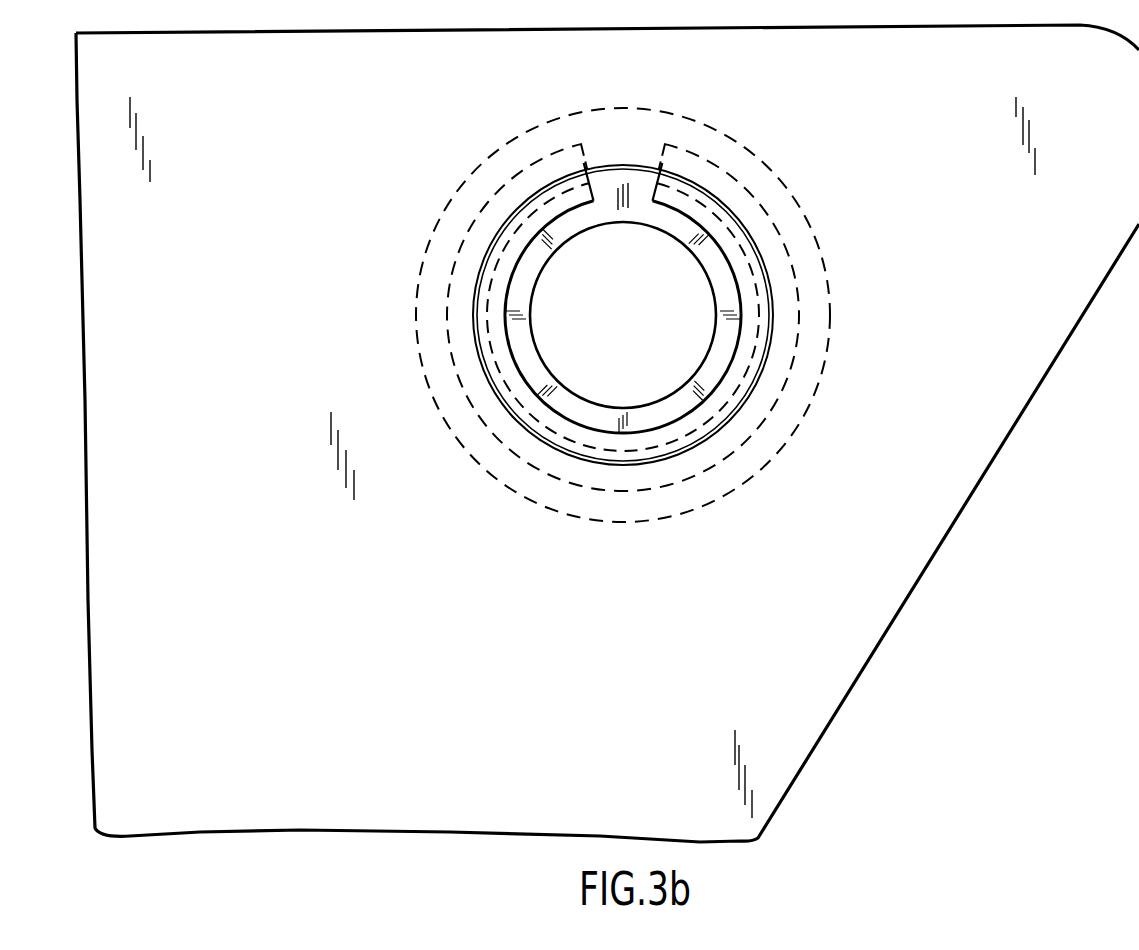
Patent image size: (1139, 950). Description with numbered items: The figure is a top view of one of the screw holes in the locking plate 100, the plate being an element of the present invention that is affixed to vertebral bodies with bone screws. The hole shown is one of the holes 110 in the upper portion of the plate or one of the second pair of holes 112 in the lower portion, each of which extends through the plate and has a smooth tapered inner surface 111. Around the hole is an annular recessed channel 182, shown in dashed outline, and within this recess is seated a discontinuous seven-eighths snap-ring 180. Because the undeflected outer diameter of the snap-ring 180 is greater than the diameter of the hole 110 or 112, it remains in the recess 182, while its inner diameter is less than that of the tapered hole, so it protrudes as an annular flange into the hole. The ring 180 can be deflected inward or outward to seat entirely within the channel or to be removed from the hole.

The plate 100 is at (470, 604).
The holes 110 is at (602, 301).
The second pair of holes 112 is at (602, 354).
The tapered inner surface 111 is at (627, 187).
The snap-ring 180 is at (745, 249).
The annular recessed channel 182 is at (645, 131).